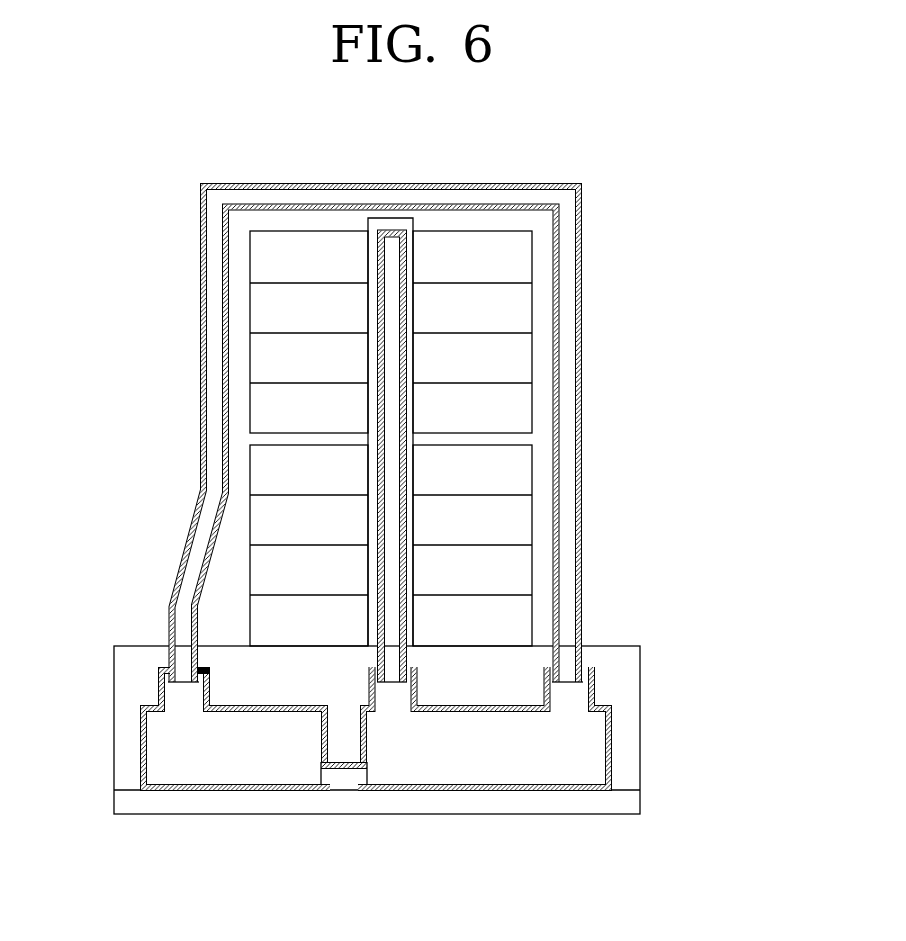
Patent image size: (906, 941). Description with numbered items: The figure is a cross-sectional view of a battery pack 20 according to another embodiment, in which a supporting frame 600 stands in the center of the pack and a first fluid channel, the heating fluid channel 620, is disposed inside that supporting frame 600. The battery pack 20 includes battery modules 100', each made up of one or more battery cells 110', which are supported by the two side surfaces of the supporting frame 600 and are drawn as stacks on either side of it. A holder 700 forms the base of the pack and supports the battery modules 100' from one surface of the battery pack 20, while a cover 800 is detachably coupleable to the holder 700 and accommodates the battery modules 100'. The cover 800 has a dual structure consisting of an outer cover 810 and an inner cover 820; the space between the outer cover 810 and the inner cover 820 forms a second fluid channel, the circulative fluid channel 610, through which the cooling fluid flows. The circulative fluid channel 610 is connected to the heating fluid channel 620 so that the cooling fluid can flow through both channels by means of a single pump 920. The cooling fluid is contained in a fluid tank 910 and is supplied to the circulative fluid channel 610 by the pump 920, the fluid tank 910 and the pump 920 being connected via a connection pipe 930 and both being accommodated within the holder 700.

The battery pack 20 is at (656, 152).
The battery modules 100' is at (473, 423).
The substrates 110' is at (471, 423).
The supporting frame 600 is at (392, 221).
The heating fluid channel 620 is at (394, 254).
The circulative fluid channel 610 is at (567, 324).
The holder 700 is at (630, 734).
The cover 800 is at (190, 380).
The outer cover 810 is at (586, 448).
The inner cover 820 is at (560, 400).
The fluid tank 910 is at (253, 772).
The pump 920 is at (550, 770).
The connection pipe 930 is at (343, 780).